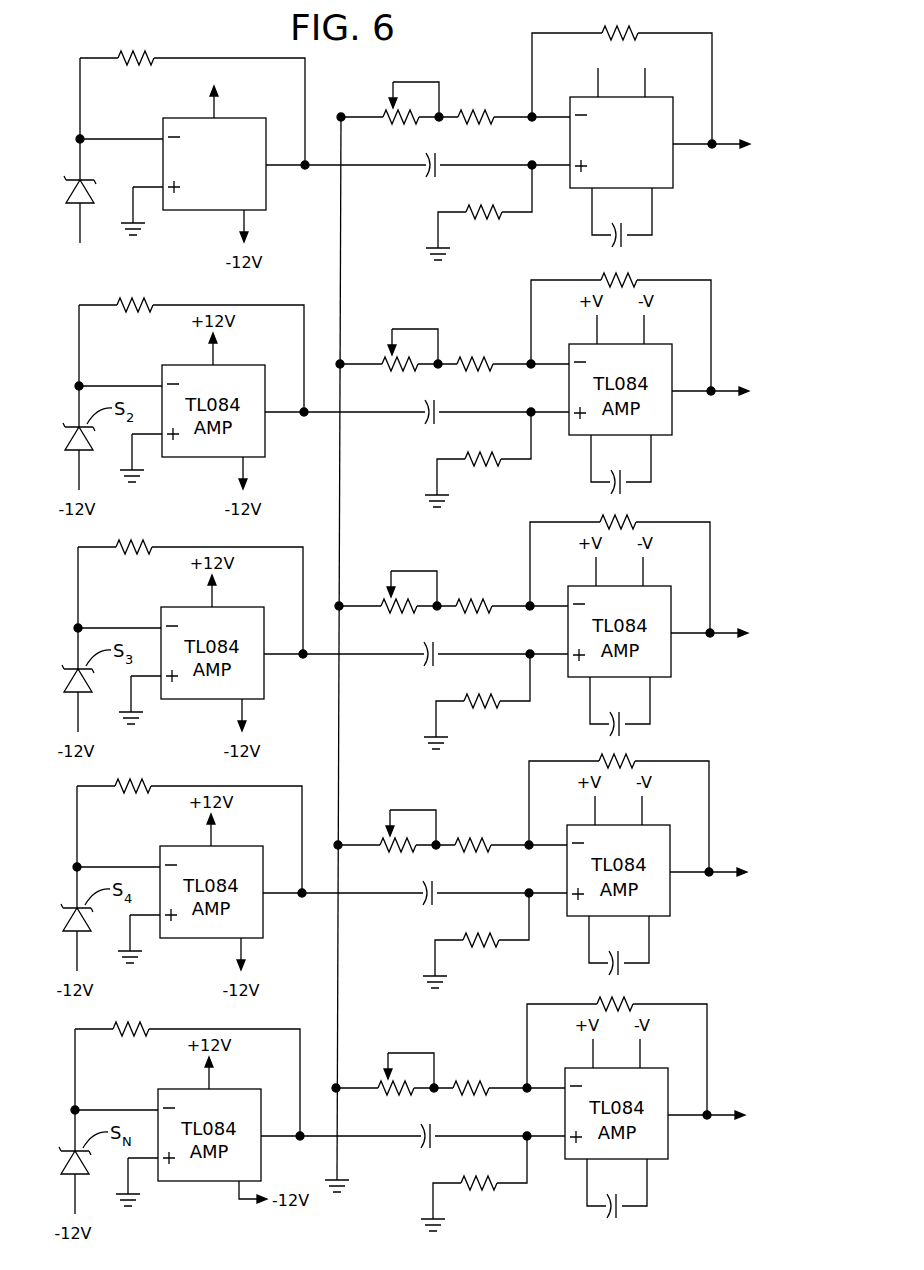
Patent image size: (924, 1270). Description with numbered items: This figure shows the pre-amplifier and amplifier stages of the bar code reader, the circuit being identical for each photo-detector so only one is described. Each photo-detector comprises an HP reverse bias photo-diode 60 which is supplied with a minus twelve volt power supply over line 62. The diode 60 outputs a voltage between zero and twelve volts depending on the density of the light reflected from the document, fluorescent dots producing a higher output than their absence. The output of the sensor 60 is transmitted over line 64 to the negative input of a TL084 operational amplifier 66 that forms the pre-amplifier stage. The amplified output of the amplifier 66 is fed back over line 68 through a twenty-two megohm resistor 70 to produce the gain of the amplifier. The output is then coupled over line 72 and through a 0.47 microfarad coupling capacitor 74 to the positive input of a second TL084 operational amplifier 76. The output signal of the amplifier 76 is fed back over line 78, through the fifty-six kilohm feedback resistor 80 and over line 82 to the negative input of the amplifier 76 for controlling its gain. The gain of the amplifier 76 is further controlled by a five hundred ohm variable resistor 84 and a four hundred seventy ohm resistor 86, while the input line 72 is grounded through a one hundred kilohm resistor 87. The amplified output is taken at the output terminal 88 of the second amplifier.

The reverse bias photo-diode 60 is at (86, 180).
The line 62 is at (81, 233).
The line 64 is at (138, 139).
The operational amplifier 66 is at (180, 118).
The line 68 is at (243, 56).
The resistor 70 is at (118, 54).
The line 72 is at (306, 171).
The coupling capacitor 74 is at (445, 158).
The operational amplifier 76 is at (670, 182).
The line 78 is at (714, 83).
The feedback resistor 80 is at (601, 30).
The line 82 is at (532, 58).
The variable resistor 84 is at (388, 107).
The resistor 86 is at (497, 122).
The resistor 87 is at (505, 219).
The output terminal 88 is at (718, 150).